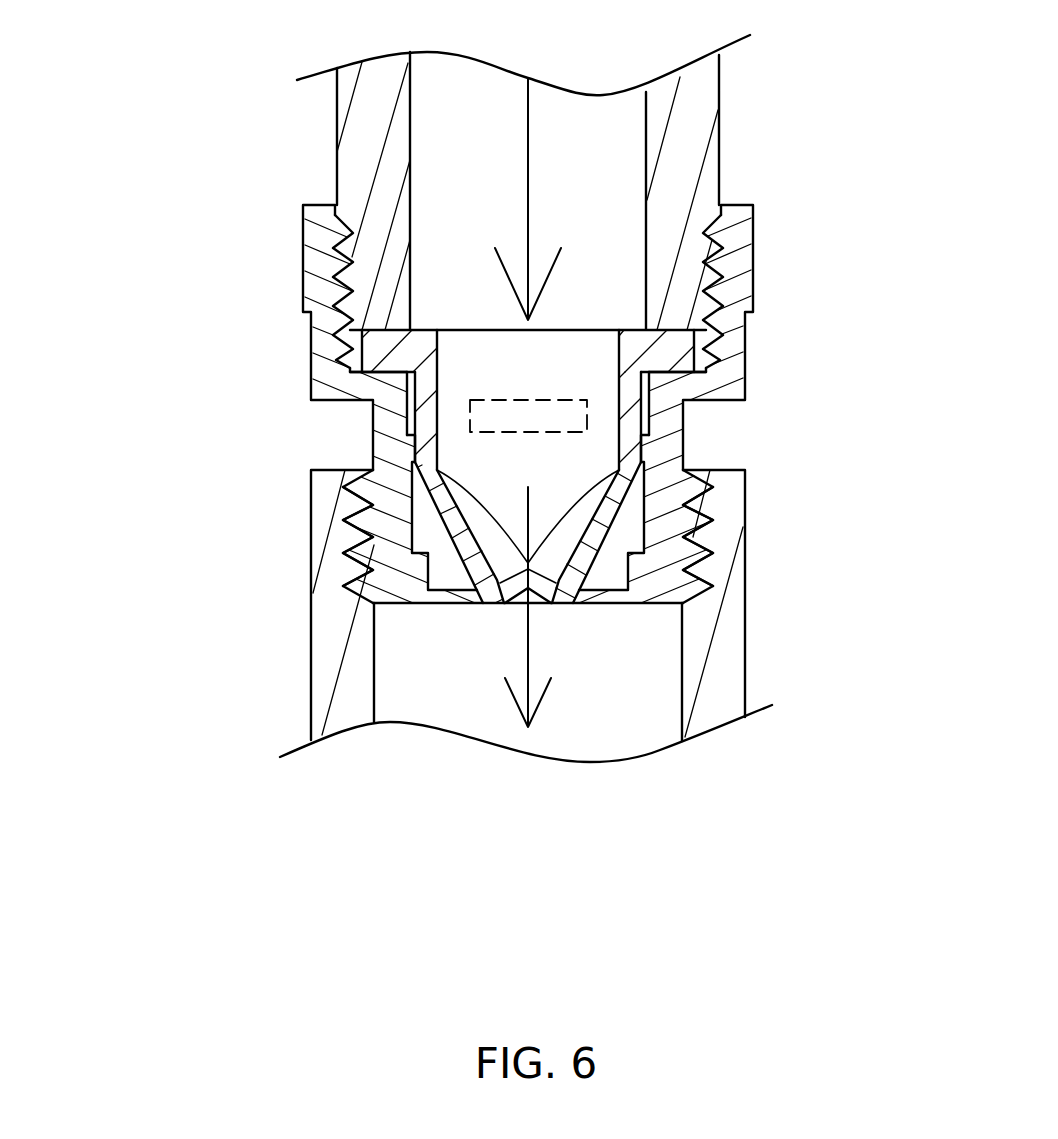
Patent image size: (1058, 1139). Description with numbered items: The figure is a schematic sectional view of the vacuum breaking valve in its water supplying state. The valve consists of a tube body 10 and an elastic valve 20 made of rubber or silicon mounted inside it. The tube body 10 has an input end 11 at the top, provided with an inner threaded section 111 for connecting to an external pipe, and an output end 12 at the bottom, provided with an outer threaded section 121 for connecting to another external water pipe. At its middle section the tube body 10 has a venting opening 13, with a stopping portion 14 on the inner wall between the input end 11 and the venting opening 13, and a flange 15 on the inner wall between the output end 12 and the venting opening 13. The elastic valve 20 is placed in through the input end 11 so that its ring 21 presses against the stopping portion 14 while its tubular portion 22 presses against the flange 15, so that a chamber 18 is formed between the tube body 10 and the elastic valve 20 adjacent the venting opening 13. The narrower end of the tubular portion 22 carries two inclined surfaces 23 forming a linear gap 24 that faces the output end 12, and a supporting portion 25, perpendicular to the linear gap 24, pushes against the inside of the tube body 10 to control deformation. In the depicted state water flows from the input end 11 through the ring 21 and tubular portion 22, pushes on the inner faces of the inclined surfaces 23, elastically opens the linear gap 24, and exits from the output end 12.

The tube body 10 is at (285, 313).
The input end 11 is at (325, 203).
The inner threaded section 111 is at (345, 257).
The output end 12 is at (664, 604).
The outer threaded section 121 is at (704, 561).
The venting opening 13 is at (410, 386).
The stopping portion 14 is at (706, 385).
The flange 15 is at (644, 447).
The chamber 18 is at (662, 437).
The elastic valve 20 is at (593, 324).
The ring 21 is at (701, 334).
The tubular portion 22 is at (412, 440).
The inclined surfaces 23 is at (603, 605).
The linear gap 24 is at (500, 604).
The supporting portion 25 is at (410, 567).